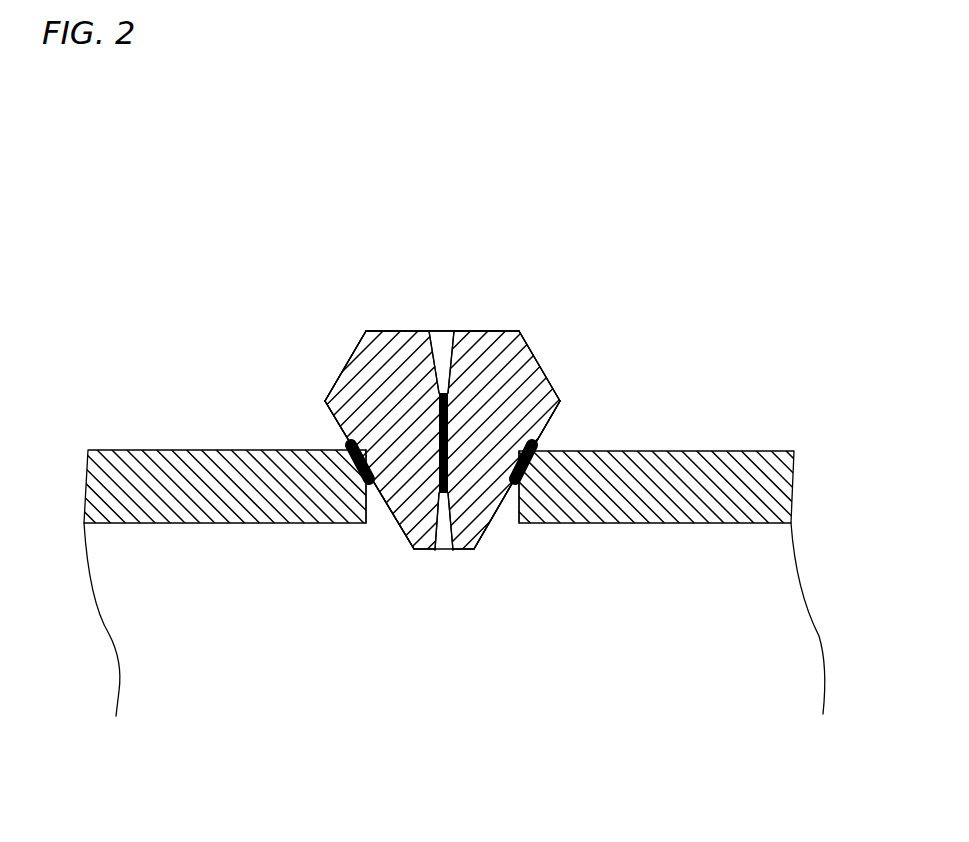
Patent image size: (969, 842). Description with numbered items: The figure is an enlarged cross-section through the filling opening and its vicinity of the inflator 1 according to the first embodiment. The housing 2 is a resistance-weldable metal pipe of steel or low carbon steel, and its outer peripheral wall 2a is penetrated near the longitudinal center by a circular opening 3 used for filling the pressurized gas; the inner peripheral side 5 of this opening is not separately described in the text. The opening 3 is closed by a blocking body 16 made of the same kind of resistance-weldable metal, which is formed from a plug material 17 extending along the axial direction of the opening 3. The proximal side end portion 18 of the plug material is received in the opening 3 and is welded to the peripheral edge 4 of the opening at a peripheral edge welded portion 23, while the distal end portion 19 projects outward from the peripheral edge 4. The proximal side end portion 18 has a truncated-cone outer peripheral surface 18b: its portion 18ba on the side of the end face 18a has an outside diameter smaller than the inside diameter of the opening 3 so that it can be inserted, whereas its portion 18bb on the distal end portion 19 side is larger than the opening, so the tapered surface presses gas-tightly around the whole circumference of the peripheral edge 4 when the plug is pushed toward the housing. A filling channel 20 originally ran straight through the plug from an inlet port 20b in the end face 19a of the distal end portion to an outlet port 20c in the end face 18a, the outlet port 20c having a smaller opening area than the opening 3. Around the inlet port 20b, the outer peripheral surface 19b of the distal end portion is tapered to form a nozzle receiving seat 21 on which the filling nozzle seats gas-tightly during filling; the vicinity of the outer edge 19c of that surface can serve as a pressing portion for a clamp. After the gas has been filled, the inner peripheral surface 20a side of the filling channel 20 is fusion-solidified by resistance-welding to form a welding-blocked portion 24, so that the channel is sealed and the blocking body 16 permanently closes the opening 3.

The fastening structure 1 is at (161, 343).
The housing 2 is at (160, 500).
The outer peripheral wall 2a is at (320, 501).
The opening 3 is at (503, 516).
The peripheral edge 4 is at (533, 441).
The through hole 5 is at (368, 503).
The blocking body 16 is at (540, 348).
The plug material 17 is at (320, 403).
The proximal side end portion 18 is at (496, 683).
The end face 18a is at (443, 543).
The outer peripheral surface 18b is at (403, 538).
The portion of the outer peripheral surface on the end face side 18ba is at (470, 553).
The portion of the outer peripheral surface on the distal end portion side 18bb is at (565, 391).
The distal end portion 19 is at (391, 215).
The end face 19a is at (376, 323).
The outer peripheral surface 19b is at (336, 355).
The outer edge 19c is at (323, 379).
The filling channel 20 is at (524, 374).
The inner peripheral surface 20a is at (431, 326).
The inlet port 20b is at (443, 326).
The outlet port 20c is at (433, 536).
The nozzle receiving seat 21 is at (511, 353).
The peripheral edge welded portion 23 is at (336, 436).
The welding-blocked portion 24 is at (438, 396).